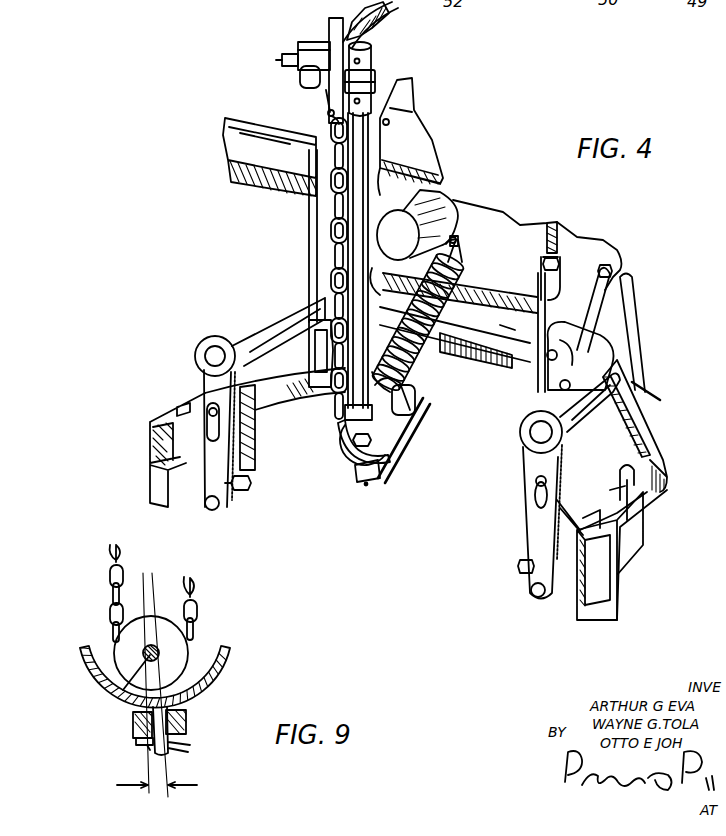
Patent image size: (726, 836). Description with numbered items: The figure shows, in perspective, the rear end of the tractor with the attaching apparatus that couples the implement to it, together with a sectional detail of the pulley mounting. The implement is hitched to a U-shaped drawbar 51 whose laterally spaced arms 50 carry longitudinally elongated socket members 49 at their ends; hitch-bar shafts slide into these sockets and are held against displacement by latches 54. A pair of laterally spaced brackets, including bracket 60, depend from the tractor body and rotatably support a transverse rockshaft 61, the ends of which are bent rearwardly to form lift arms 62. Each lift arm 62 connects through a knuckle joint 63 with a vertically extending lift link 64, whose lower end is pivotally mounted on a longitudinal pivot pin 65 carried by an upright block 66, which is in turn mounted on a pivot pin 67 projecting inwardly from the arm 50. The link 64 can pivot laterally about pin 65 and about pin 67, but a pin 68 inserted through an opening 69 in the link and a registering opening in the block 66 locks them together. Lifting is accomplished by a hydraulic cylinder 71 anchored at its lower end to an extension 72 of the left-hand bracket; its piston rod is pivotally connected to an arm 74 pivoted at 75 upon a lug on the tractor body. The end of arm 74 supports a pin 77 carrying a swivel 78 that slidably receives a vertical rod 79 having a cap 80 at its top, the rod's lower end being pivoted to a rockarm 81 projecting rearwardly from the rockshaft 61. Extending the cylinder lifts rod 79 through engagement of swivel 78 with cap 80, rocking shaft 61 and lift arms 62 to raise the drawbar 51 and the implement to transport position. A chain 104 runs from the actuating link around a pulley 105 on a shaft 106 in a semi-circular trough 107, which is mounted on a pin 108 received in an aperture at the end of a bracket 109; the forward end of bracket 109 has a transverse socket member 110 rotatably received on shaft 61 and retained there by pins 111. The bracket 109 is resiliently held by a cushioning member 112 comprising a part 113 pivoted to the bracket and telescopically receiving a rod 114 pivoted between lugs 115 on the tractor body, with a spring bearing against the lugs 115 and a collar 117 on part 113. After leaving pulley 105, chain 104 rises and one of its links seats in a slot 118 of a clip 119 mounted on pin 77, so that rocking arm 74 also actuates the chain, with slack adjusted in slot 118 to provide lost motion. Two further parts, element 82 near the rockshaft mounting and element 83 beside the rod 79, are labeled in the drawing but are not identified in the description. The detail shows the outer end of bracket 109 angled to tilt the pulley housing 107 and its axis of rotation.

In FIG. 4, the socket member 49 is at (148, 455).
In FIG. 4, the arm 50 is at (264, 424).
In FIG. 4, the drawbar 51 is at (661, 394).
In FIG. 4, the latch 54 is at (622, 476).
In FIG. 4, the bracket 60 is at (563, 297).
In FIG. 4, the rockshaft 61 is at (605, 367).
In FIG. 4, the lift arm 62 is at (268, 318).
In FIG. 4, the knuckle joint 63 is at (195, 355).
In FIG. 4, the lift link 64 is at (203, 383).
In FIG. 4, the pivot pin 65 is at (218, 508).
In FIG. 4, the upright block 66 is at (565, 523).
In FIG. 4, the pivot pin 67 is at (252, 483).
In FIG. 4, the pin 68 is at (536, 480).
In FIG. 4, the opening 69 is at (536, 517).
In FIG. 4, the hydraulic cylinder 71 is at (318, 226).
In FIG. 4, the extension 72 is at (332, 386).
In FIG. 4, the arm 74 is at (331, 35).
In FIG. 4, the pivot 75 is at (356, 14).
In FIG. 4, the pin 77 is at (280, 60).
In FIG. 4, the swivel 78 is at (378, 76).
In FIG. 4, the rod 79 is at (358, 190).
In FIG. 4, the cap 80 is at (373, 59).
In FIG. 4, the rockarm 81 is at (391, 382).
In FIG. 4, the lift link 82 is at (597, 308).
In FIG. 4, the roller drum 83 is at (414, 239).
In FIG. 4, the chain 104 is at (330, 251).
In FIG. 4, the pulley 105 is at (394, 452).
In FIG. 9, the pulley 105 is at (120, 648).
In FIG. 4, the shaft 106 is at (366, 449).
In FIG. 9, the shaft 106 is at (123, 690).
In FIG. 4, the trough 107 is at (376, 441).
In FIG. 9, the trough 107 is at (222, 665).
In FIG. 9, the pin 108 is at (169, 752).
In FIG. 4, the bracket 109 is at (410, 441).
In FIG. 9, the bracket 109 is at (133, 735).
In FIG. 4, the socket member 110 is at (454, 331).
In FIG. 4, the pin 111 is at (486, 300).
In FIG. 4, the cushioning member 112 is at (453, 363).
In FIG. 4, the part 113 is at (412, 402).
In FIG. 4, the rod 114 is at (450, 250).
In FIG. 4, the lug 115 is at (448, 272).
In FIG. 4, the collar 117 is at (420, 395).
In FIG. 4, the slot 118 is at (327, 115).
In FIG. 4, the clip 119 is at (325, 100).